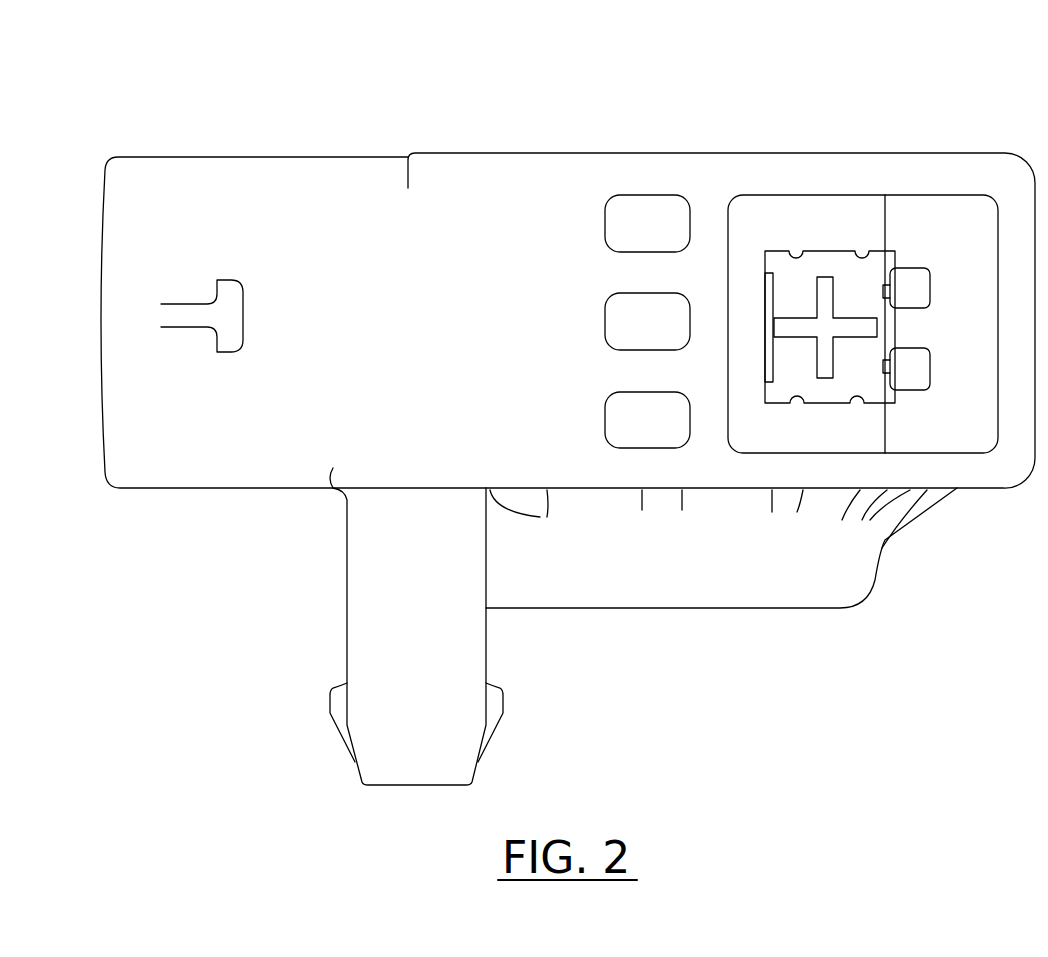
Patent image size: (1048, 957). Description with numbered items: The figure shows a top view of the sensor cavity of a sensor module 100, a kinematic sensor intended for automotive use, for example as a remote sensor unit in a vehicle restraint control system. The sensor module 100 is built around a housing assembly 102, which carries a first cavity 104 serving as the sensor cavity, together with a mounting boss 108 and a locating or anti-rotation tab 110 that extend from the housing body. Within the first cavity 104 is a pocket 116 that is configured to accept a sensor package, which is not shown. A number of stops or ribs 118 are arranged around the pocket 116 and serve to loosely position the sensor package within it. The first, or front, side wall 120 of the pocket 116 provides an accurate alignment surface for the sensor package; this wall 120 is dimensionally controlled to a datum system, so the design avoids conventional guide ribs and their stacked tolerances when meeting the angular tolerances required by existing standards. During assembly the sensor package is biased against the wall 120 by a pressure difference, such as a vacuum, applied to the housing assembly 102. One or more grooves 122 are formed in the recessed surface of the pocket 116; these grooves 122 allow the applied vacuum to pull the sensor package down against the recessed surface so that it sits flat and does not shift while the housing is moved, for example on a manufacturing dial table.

The sensor module 100 is at (440, 70).
The housing assembly 102 is at (563, 150).
The first cavity 104 is at (942, 218).
The mounting boss 108 is at (716, 610).
The locating tab 110 is at (345, 600).
The pocket 116 is at (855, 290).
The stops 118 is at (932, 297).
The first side wall 120 is at (778, 292).
The grooves 122 is at (830, 380).